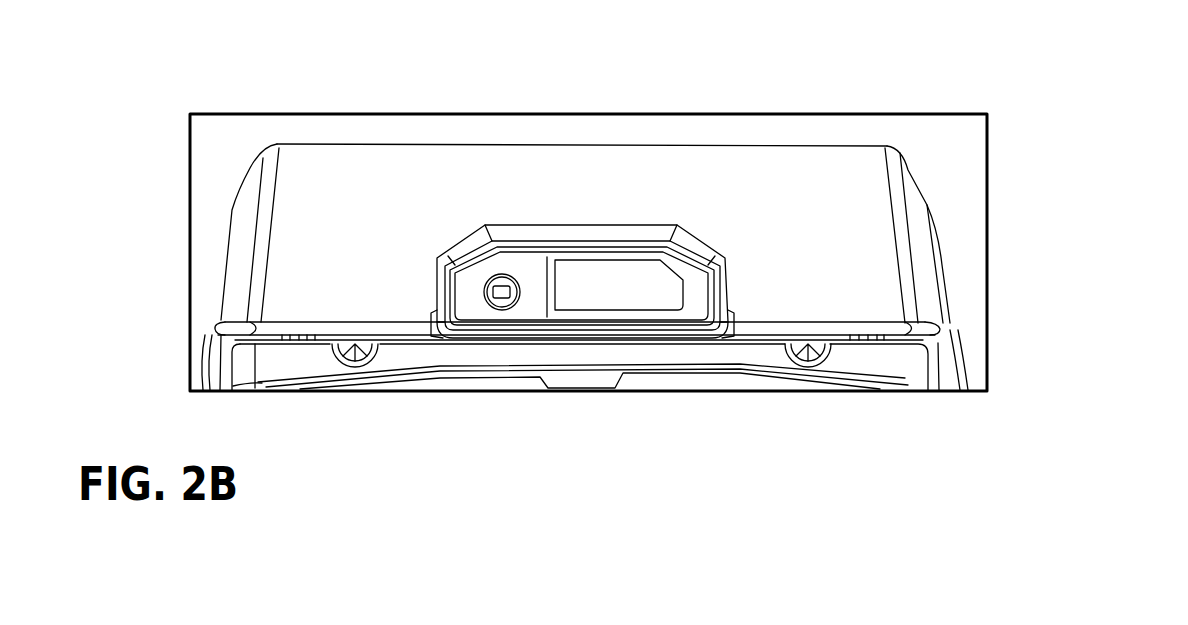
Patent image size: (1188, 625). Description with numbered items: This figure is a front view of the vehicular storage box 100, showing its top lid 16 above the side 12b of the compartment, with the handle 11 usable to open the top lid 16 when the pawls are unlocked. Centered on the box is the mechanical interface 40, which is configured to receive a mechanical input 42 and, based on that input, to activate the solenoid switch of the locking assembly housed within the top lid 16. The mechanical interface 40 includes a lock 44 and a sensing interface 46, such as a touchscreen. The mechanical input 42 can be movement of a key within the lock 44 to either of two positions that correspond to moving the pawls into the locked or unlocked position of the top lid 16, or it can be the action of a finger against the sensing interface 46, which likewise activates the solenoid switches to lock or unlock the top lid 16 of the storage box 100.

The vehicular storage box 100 is at (937, 153).
The top lid 16 is at (862, 285).
The side 12b is at (880, 363).
The mechanical interface 40 is at (468, 258).
The handle 11 is at (587, 248).
The lock 44 is at (498, 303).
The sensing interface 46 is at (627, 293).
The mechanical input 42 is at (588, 293).